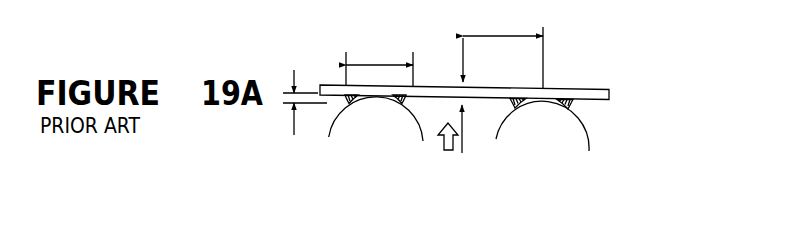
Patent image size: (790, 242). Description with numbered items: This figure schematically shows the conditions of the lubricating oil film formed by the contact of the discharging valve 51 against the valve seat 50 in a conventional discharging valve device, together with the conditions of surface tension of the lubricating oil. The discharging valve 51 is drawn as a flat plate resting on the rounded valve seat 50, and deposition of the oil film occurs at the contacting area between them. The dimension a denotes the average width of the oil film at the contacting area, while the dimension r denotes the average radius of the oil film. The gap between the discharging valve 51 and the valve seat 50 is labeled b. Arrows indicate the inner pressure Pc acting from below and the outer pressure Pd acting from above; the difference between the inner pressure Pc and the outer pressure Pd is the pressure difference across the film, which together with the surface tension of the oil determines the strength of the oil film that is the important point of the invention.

The valve seat 50 is at (365, 128).
The discharging valve 51 is at (609, 95).
The average width of oil film a is at (379, 63).
The gap height b is at (299, 102).
The average radius of oil film r is at (503, 48).
The outer pressure Pd is at (478, 60).
The inner pressure Pc is at (463, 130).